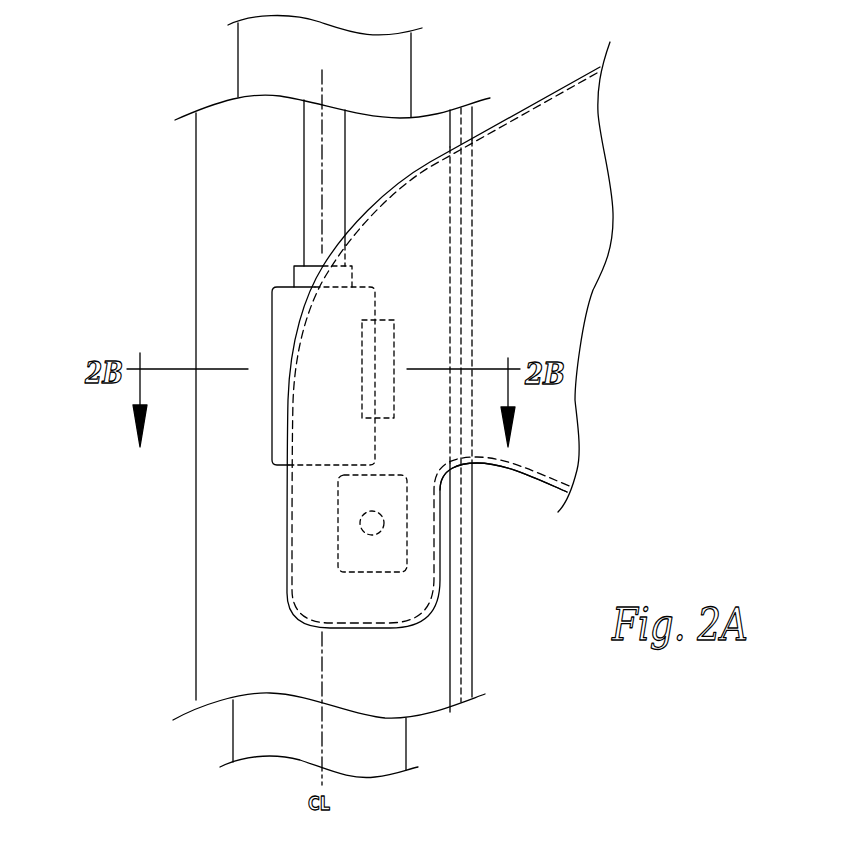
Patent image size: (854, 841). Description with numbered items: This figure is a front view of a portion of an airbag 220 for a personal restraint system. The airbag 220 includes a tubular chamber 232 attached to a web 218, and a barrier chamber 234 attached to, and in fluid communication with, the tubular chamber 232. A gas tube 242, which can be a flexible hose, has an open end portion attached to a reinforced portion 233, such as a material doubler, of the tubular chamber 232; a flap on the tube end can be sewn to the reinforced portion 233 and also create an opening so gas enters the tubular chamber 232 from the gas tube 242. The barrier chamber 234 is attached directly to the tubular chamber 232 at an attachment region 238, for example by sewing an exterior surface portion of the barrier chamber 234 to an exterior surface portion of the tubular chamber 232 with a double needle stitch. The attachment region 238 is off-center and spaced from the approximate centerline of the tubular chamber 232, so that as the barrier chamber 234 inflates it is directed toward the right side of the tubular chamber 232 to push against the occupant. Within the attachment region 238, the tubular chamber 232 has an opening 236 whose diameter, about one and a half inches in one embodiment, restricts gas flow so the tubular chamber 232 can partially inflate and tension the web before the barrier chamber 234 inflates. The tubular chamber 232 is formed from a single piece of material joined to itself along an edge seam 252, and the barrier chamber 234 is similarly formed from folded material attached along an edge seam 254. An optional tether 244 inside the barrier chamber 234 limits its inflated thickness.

The web 218 is at (398, 54).
The airbag 220 is at (136, 137).
The tubular chamber 232 is at (227, 578).
The reinforced portion 233 is at (283, 328).
The barrier chamber 234 is at (573, 288).
The opening 236 is at (360, 522).
The attachment region 238 is at (388, 572).
The gas tube 242 is at (313, 192).
The tether 244 is at (397, 320).
The edge seam 252 is at (460, 665).
The edge seam 254 is at (515, 473).